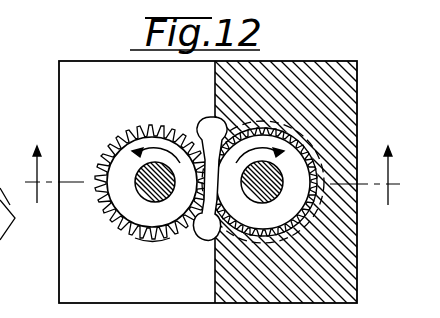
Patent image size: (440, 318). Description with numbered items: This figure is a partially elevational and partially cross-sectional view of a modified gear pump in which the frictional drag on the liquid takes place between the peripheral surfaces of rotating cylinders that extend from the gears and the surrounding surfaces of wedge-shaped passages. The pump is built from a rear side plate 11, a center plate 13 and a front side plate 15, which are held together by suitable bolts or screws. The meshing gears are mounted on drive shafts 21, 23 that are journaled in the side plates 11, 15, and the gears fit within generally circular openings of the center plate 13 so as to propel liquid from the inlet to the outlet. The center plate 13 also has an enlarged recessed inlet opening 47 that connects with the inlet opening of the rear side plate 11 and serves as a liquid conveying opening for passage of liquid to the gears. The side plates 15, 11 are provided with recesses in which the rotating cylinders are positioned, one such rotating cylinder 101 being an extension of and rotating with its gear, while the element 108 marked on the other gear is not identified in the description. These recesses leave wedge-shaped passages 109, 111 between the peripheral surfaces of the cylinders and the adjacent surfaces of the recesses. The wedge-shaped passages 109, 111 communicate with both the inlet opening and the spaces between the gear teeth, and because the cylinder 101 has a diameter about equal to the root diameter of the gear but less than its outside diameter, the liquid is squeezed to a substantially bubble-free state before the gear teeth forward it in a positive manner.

The rear side plate 11 is at (200, 193).
The center plate 13 is at (67, 289).
The front side plate 15 is at (347, 277).
The drive shaft 21 is at (168, 198).
The drive shaft 23 is at (260, 198).
The recessed inlet opening 47 is at (208, 118).
The rotating cylinder 101 is at (310, 160).
The gear teeth 108 is at (168, 243).
The wedge-shaped passage 109 is at (272, 130).
The wedge-shaped passage 111 is at (176, 125).